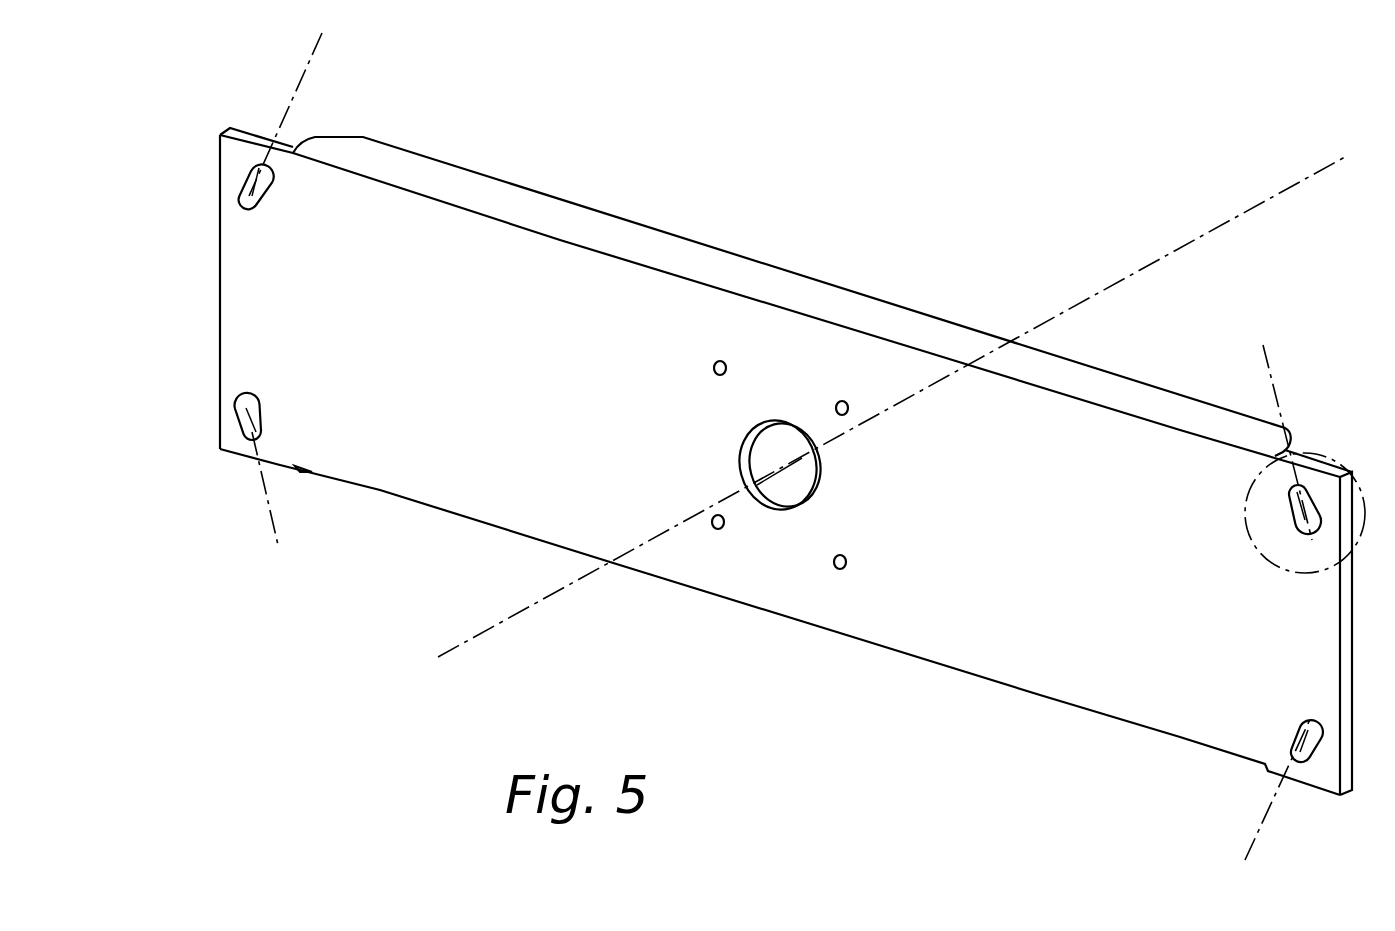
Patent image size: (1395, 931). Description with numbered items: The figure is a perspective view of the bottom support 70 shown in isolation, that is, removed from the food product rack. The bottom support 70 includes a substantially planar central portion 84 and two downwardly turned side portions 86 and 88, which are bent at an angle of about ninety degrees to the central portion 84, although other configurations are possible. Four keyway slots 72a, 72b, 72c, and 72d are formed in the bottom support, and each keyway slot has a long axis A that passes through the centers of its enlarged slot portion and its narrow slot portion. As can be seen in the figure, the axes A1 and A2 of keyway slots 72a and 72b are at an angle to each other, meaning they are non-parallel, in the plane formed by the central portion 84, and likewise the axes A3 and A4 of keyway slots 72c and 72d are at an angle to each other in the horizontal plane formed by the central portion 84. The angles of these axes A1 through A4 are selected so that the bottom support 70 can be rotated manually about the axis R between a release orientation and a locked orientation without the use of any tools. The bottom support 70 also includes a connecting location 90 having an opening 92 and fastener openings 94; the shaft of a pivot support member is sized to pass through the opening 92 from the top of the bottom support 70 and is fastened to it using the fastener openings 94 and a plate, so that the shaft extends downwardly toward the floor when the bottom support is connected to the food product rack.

The bottom support 70 is at (746, 441).
The keyway slot 72a is at (243, 187).
The keyway slot 72b is at (238, 425).
The keyway slot 72c is at (1295, 523).
The keyway slot 72d is at (1293, 742).
The central portion 84 is at (786, 461).
The side portion 86 is at (503, 530).
The side portion 88 is at (792, 296).
The connecting location 90 is at (830, 315).
The opening 92 is at (820, 471).
The fastener openings 94 is at (714, 368).
The long axis A is at (1302, 577).
The axis A1 is at (293, 96).
The axis A2 is at (265, 500).
The axis A3 is at (1283, 378).
The axis A4 is at (1270, 815).
The axis R is at (500, 623).